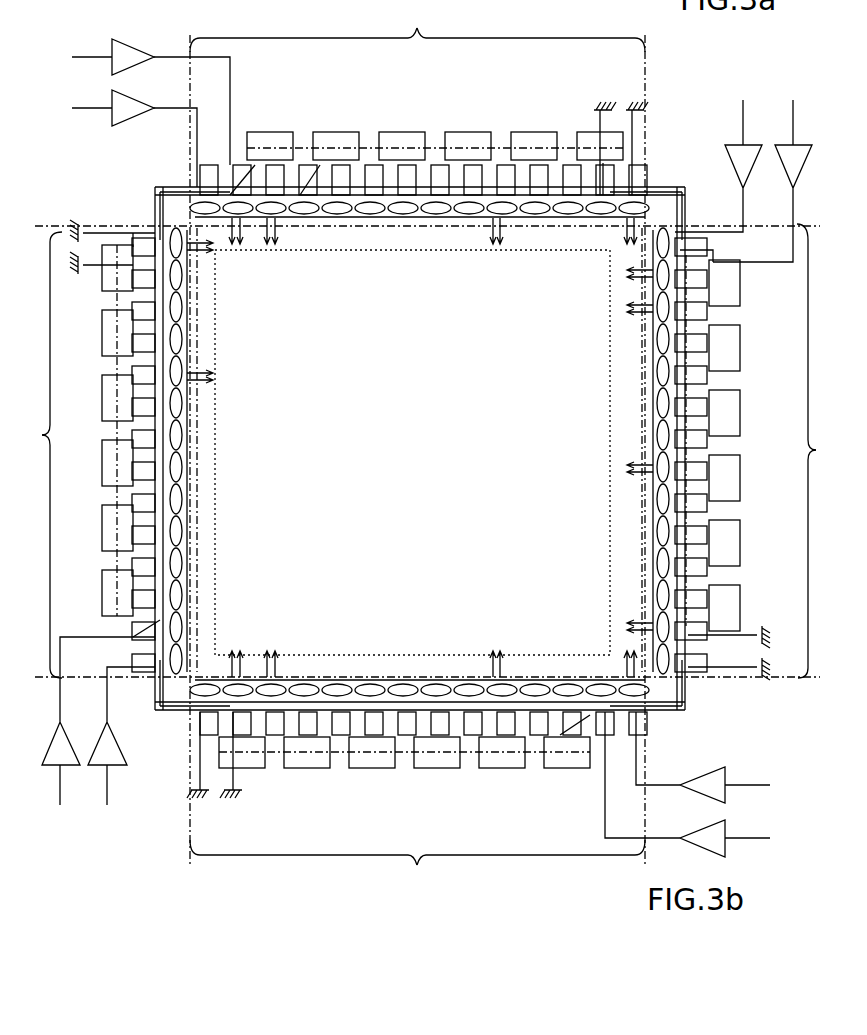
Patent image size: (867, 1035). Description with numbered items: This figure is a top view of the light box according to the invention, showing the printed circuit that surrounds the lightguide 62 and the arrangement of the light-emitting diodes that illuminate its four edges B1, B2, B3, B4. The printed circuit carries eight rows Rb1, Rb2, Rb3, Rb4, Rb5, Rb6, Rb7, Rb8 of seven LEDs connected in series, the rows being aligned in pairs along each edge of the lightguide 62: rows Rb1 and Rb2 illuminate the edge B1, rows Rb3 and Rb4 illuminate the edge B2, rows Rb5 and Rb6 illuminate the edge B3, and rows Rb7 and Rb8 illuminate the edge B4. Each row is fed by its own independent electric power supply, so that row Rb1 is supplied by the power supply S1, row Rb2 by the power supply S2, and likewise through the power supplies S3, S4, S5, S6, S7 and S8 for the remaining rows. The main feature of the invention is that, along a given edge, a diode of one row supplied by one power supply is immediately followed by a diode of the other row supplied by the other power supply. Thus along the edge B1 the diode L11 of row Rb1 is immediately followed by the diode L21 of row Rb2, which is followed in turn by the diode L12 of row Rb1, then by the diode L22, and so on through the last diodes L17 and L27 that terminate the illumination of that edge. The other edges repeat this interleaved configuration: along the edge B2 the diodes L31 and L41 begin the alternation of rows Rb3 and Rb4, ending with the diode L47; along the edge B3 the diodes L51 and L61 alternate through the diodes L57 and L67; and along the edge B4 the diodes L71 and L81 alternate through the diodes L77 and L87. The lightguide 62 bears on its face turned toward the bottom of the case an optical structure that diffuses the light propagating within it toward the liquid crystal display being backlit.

The lightguide 62 is at (470, 367).
The power supply S1 is at (130, 98).
The power supply S2 is at (130, 42).
The power supply S3 is at (727, 160).
The power supply S4 is at (780, 163).
The power supply S5 is at (727, 769).
The power supply S6 is at (725, 826).
The power supply S7 is at (117, 768).
The power supply S8 is at (71, 768).
The edge of the lightguide B1 is at (186, 188).
The edge of the lightguide B2 is at (686, 212).
The edge of the lightguide B3 is at (662, 712).
The edge of the lightguide B4 is at (155, 692).
The light-emitting diode L11 is at (208, 226).
The light-emitting diode L12 is at (274, 227).
The light-emitting diode L17 is at (598, 227).
The light-emitting diode L21 is at (261, 163).
The light-emitting diode L22 is at (329, 163).
The light-emitting diode L27 is at (640, 200).
The light-emitting diode L31 is at (652, 250).
The light-emitting diode L41 is at (684, 290).
The light-emitting diode L47 is at (688, 643).
The light-emitting diode L51 is at (620, 680).
The light-emitting diode L57 is at (238, 682).
The light-emitting diode L61 is at (567, 741).
The light-emitting diode L67 is at (203, 727).
The light-emitting diode L71 is at (193, 654).
The light-emitting diode L77 is at (188, 290).
The light-emitting diode L81 is at (140, 632).
The light-emitting diode L87 is at (155, 215).
The row of LEDs Rb1 is at (303, 26).
The row of LEDs Rb2 is at (531, 26).
The row of LEDs Rb3 is at (800, 564).
The row of LEDs Rb4 is at (800, 337).
The row of LEDs Rb5 is at (531, 867).
The row of LEDs Rb6 is at (303, 867).
The row of LEDs Rb7 is at (59, 556).
The row of LEDs Rb8 is at (59, 336).